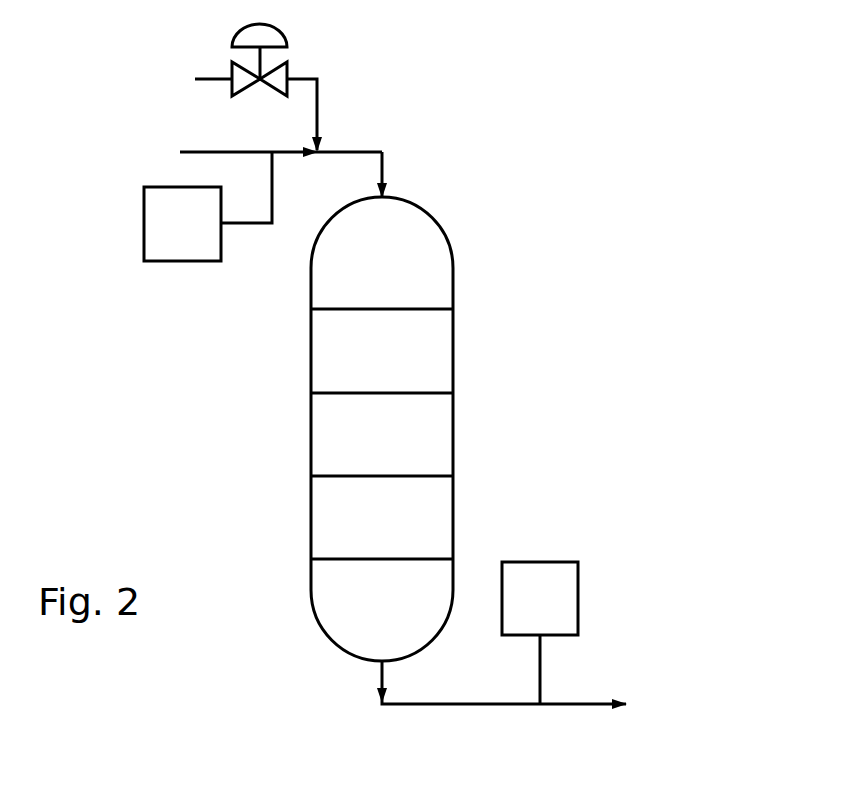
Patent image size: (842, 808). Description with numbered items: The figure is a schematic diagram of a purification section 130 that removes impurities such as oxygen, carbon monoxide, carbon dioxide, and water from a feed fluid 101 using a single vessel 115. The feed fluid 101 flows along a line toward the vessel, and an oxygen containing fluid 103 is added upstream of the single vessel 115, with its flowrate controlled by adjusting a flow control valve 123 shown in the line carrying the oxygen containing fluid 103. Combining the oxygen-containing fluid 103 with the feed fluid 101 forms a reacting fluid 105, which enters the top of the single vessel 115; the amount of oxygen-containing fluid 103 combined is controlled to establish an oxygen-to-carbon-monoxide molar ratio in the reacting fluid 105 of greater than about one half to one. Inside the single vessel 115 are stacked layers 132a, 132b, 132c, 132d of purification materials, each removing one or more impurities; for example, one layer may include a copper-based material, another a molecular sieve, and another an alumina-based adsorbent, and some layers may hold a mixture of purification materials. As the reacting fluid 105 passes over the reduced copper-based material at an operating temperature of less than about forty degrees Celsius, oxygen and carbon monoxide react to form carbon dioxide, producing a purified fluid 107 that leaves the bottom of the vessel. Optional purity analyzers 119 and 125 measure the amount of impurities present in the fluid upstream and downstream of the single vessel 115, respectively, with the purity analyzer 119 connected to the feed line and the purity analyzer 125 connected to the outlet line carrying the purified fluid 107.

The feed fluid 101 is at (193, 150).
The oxygen containing fluid 103 is at (203, 78).
The reacting fluid 105 is at (383, 163).
The purified fluid 107 is at (586, 702).
The single vessel 115 is at (307, 430).
The purity analyzer 119 is at (210, 242).
The flow control valve 123 is at (287, 70).
The purity analyzer 125 is at (566, 617).
The purification section 130 is at (648, 318).
The layer of purification material 132a is at (418, 308).
The layer of purification material 132b is at (418, 392).
The layer of purification material 132c is at (418, 475).
The layer of purification material 132d is at (418, 558).